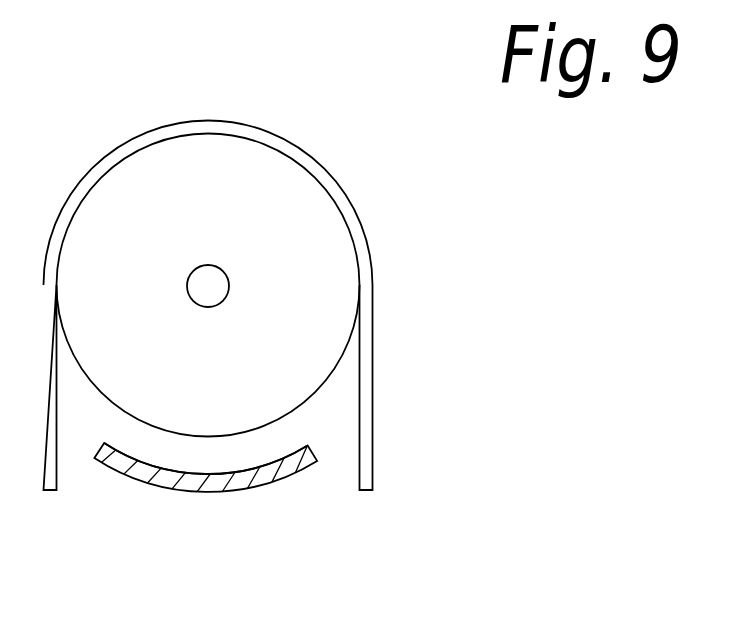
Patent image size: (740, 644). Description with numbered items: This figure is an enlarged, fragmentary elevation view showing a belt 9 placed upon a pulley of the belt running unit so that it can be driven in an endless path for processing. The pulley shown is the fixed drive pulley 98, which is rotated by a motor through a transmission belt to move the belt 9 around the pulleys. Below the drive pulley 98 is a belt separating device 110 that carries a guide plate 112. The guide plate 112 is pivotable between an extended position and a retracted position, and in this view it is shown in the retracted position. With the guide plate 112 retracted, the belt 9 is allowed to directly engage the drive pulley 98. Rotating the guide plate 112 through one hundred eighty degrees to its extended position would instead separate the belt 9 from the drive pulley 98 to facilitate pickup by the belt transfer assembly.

The belt 9 is at (366, 420).
The fixed drive pulley 98 is at (315, 207).
The belt separating device 110 is at (285, 490).
The guide plate 112 is at (210, 474).